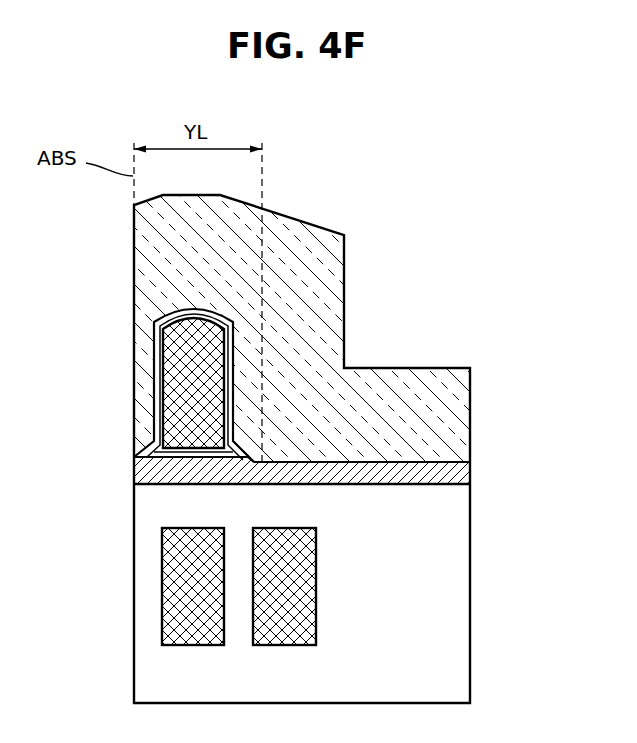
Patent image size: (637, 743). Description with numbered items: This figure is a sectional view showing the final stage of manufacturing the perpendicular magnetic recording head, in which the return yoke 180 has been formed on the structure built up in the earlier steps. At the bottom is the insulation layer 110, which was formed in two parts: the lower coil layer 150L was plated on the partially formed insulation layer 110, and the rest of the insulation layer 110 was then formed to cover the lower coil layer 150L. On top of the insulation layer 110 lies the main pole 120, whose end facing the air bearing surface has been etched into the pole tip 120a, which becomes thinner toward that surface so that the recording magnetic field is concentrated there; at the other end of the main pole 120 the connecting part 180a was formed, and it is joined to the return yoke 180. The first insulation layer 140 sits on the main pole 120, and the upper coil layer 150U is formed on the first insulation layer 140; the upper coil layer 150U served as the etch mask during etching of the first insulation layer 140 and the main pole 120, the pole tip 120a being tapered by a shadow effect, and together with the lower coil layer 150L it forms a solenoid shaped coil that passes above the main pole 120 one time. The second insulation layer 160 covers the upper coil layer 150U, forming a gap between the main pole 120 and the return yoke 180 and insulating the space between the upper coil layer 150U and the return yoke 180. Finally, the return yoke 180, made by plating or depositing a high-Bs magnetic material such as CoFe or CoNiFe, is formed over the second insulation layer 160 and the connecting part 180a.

The insulation layer 110 is at (458, 624).
The main pole 120 is at (458, 473).
The pole tip 120a is at (140, 478).
The first insulation layer 140 is at (133, 456).
The lower coil layer 150L is at (322, 575).
The upper coil layer 150U is at (226, 387).
The second insulation layer 160 is at (152, 442).
The return yoke 180 is at (462, 417).
The connecting part 180a is at (443, 460).